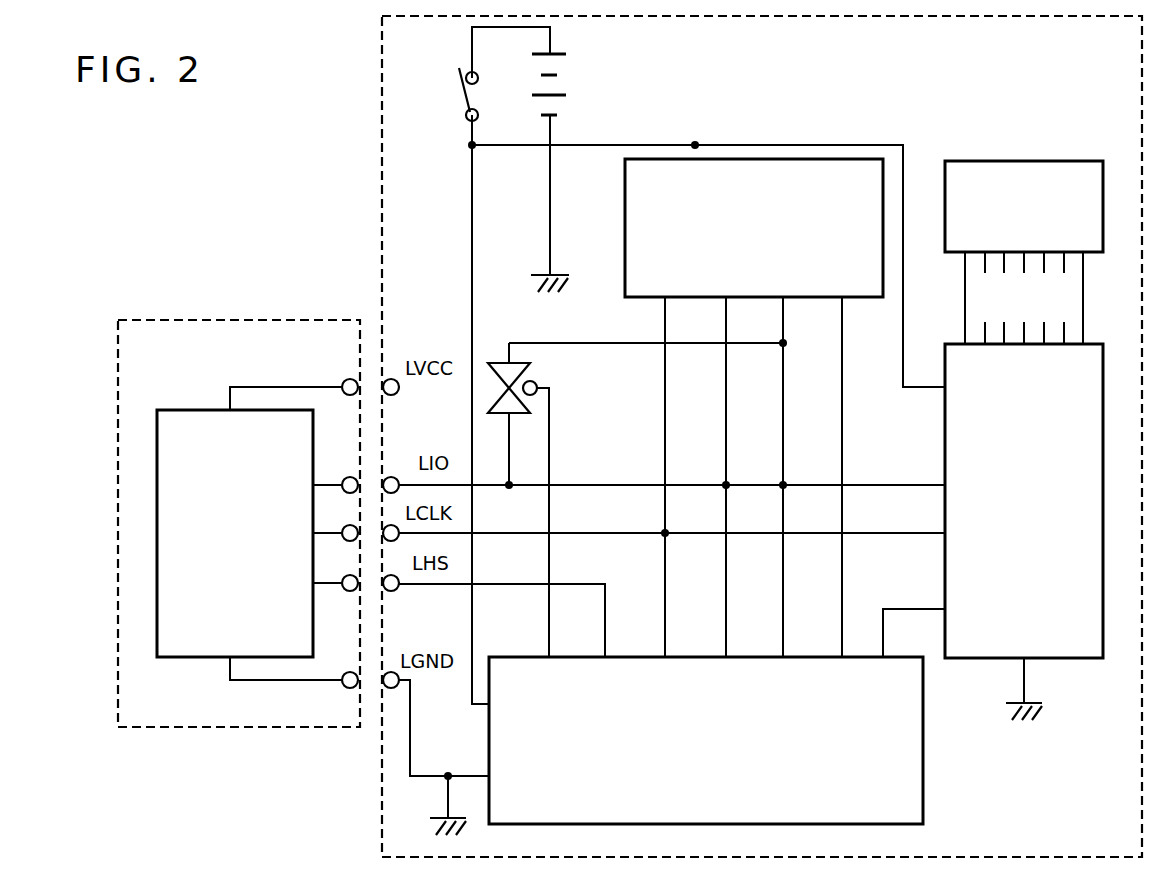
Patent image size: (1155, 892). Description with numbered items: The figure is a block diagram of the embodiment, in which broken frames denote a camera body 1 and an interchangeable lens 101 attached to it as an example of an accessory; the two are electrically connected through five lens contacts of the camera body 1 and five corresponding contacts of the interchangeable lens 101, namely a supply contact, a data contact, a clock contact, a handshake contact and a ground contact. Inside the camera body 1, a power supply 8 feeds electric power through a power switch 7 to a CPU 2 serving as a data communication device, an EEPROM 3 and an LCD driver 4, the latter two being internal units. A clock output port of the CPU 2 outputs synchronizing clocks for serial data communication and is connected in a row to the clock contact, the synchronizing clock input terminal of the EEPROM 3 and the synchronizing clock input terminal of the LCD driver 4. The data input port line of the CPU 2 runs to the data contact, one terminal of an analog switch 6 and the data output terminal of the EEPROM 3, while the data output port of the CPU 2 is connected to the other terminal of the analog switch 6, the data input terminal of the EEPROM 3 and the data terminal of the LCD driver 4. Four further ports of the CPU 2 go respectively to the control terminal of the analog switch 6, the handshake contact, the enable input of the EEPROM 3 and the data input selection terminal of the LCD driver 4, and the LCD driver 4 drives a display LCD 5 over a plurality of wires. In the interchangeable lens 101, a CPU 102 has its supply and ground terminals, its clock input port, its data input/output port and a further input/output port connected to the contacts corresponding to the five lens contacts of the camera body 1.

The camera body 1 is at (380, 90).
The CPU 2 is at (924, 779).
The EEPROM 3 is at (770, 158).
The LCD driver 4 is at (1073, 660).
The display LCD 5 is at (1053, 160).
The analog switch 6 is at (500, 358).
The power switch 7 is at (455, 100).
The power supply 8 is at (566, 92).
The interchangeable lens 101 is at (290, 318).
The CPU 102 is at (185, 408).